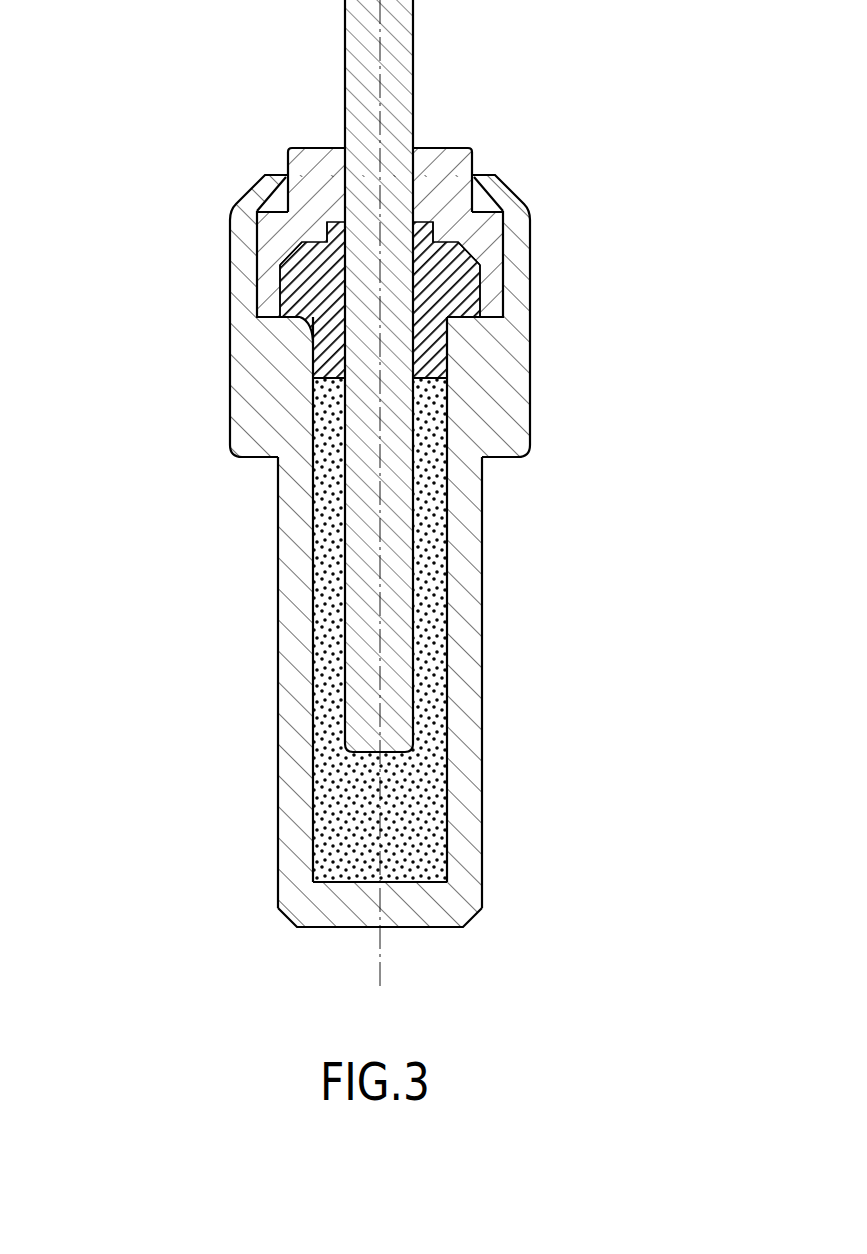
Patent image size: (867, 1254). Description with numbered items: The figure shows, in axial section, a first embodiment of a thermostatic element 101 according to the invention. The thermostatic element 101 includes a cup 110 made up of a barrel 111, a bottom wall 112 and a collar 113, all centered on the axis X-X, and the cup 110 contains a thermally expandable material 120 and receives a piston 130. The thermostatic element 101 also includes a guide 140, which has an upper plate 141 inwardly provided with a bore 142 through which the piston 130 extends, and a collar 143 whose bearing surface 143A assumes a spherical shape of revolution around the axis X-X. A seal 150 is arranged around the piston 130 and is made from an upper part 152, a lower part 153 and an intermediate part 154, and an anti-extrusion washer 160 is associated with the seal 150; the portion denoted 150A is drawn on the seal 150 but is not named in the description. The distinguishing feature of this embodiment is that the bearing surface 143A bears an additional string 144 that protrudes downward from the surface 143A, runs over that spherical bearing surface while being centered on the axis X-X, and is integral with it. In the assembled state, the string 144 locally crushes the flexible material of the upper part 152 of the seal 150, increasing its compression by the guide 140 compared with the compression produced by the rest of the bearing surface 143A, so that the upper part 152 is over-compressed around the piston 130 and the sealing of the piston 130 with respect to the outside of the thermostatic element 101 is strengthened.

The thermostatic element 101 is at (222, 180).
The cup 110 is at (108, 580).
The barrel 111 is at (303, 637).
The bottom wall 112 is at (318, 907).
The collar 113 is at (247, 414).
The thermally expandable material 120 is at (360, 860).
The piston 130 is at (393, 647).
The guide 140 is at (713, 173).
The upper plate 141 is at (447, 173).
The bore 142 is at (404, 169).
The collar 143 is at (490, 260).
The bearing surface 143A is at (305, 280).
The string 144 is at (318, 299).
The seal 150 is at (718, 308).
The seal outer portion 150A is at (266, 243).
The upper part 152 is at (478, 268).
The lower part 153 is at (440, 318).
The intermediate part 154 is at (460, 300).
The anti-extrusion washer 160 is at (343, 235).